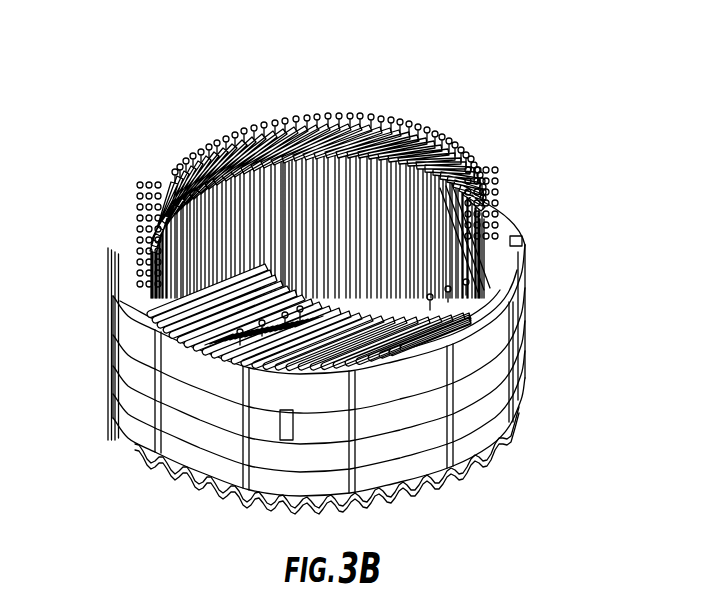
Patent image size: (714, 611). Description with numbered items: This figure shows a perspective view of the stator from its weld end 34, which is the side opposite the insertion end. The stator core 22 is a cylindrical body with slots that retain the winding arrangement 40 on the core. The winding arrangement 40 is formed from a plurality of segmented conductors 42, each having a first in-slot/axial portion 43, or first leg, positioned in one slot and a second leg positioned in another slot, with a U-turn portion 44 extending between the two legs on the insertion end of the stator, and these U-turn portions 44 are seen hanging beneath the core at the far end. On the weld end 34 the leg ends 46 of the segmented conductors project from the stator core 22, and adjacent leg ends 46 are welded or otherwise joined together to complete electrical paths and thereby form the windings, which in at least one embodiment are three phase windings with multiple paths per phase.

The stator core 22 is at (468, 412).
The weld end 34 is at (512, 228).
The winding arrangement 40 is at (274, 240).
The segmented conductors 42 is at (245, 135).
The first in-slot/axial portion 43 is at (292, 198).
The U-turn portion 44 is at (268, 512).
The leg ends 46 is at (133, 260).